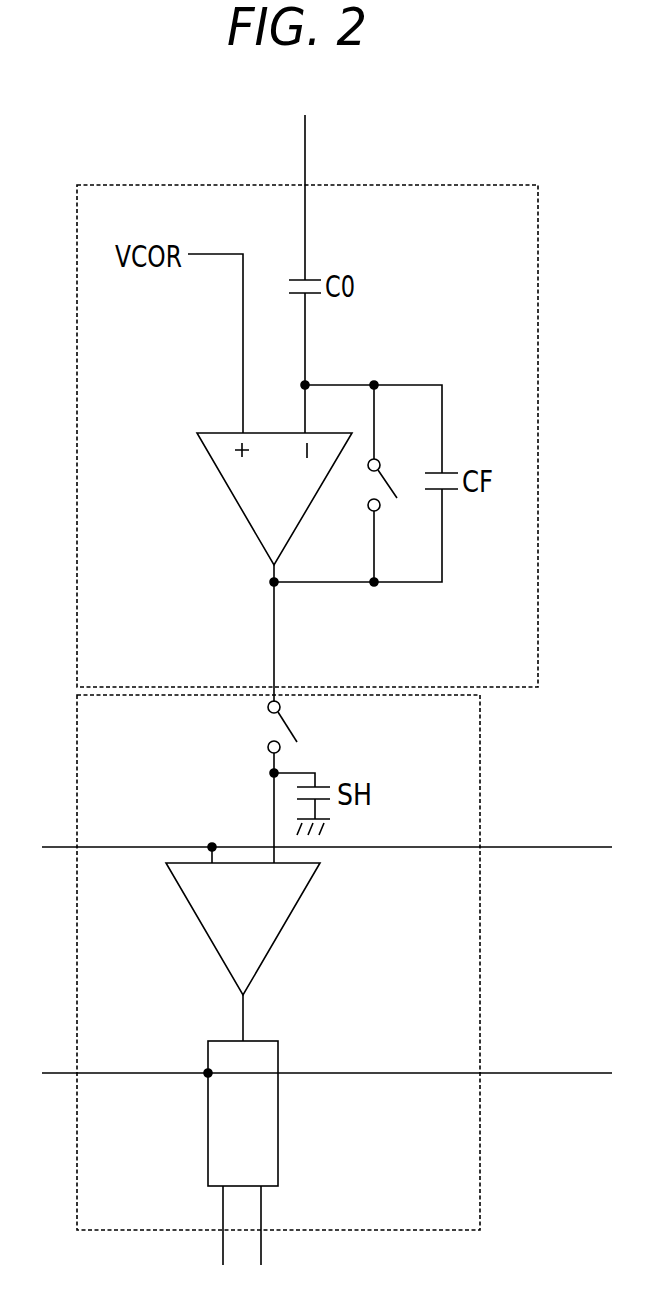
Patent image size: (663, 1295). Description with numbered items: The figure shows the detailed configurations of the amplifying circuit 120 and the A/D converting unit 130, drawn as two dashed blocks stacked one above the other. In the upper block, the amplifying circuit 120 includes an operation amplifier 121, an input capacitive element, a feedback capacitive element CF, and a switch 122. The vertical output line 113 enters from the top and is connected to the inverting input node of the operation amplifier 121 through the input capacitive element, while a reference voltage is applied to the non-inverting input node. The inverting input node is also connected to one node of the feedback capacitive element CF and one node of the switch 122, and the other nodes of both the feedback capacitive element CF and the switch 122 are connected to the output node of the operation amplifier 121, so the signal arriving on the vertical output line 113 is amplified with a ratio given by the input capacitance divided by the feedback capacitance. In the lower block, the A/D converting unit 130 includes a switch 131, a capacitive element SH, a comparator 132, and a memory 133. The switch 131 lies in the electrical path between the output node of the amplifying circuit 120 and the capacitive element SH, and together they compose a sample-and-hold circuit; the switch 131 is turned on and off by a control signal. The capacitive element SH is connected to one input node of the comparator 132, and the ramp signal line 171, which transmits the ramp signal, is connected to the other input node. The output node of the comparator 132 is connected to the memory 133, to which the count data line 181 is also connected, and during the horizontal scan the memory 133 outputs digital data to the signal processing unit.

The vertical output line 113 is at (307, 153).
The amplifying circuit 120 is at (540, 318).
The operation amplifier 121 is at (230, 477).
The switch 122 is at (380, 507).
The A/D converting unit 130 is at (482, 943).
The switch 131 is at (268, 746).
The comparator 132 is at (205, 917).
The memory 133 is at (207, 1130).
The ramp signal line 171 is at (402, 847).
The count data line 181 is at (402, 1073).